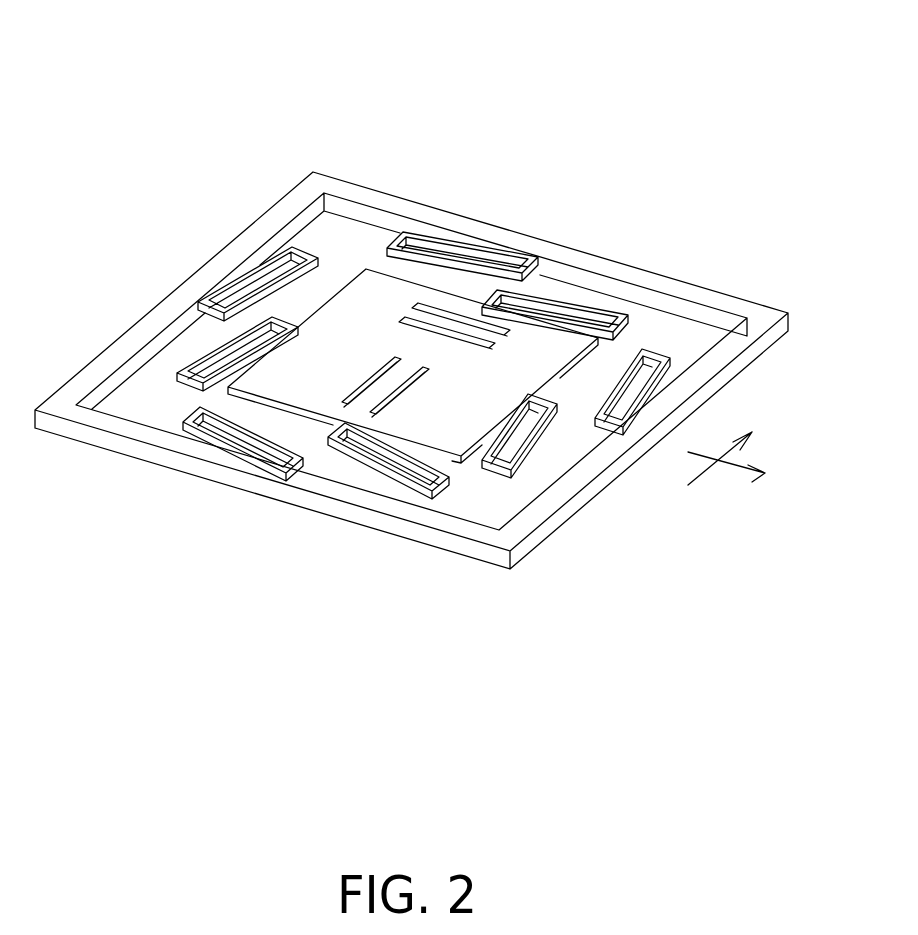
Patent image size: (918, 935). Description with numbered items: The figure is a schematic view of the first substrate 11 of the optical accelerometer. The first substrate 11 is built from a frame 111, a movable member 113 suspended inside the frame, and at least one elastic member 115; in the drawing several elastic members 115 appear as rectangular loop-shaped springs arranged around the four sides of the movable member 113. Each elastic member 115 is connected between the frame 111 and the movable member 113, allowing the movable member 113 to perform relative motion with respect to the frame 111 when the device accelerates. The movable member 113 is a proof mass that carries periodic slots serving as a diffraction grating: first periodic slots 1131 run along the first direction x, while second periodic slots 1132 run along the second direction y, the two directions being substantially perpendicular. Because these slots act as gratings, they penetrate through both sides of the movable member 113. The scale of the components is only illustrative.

The first substrate 11 is at (186, 92).
The frame 111 is at (363, 497).
The movable member 113 is at (355, 388).
The first periodic slots 1131 is at (488, 320).
The second periodic slots 1132 is at (352, 392).
The elastic member 115 is at (257, 447).